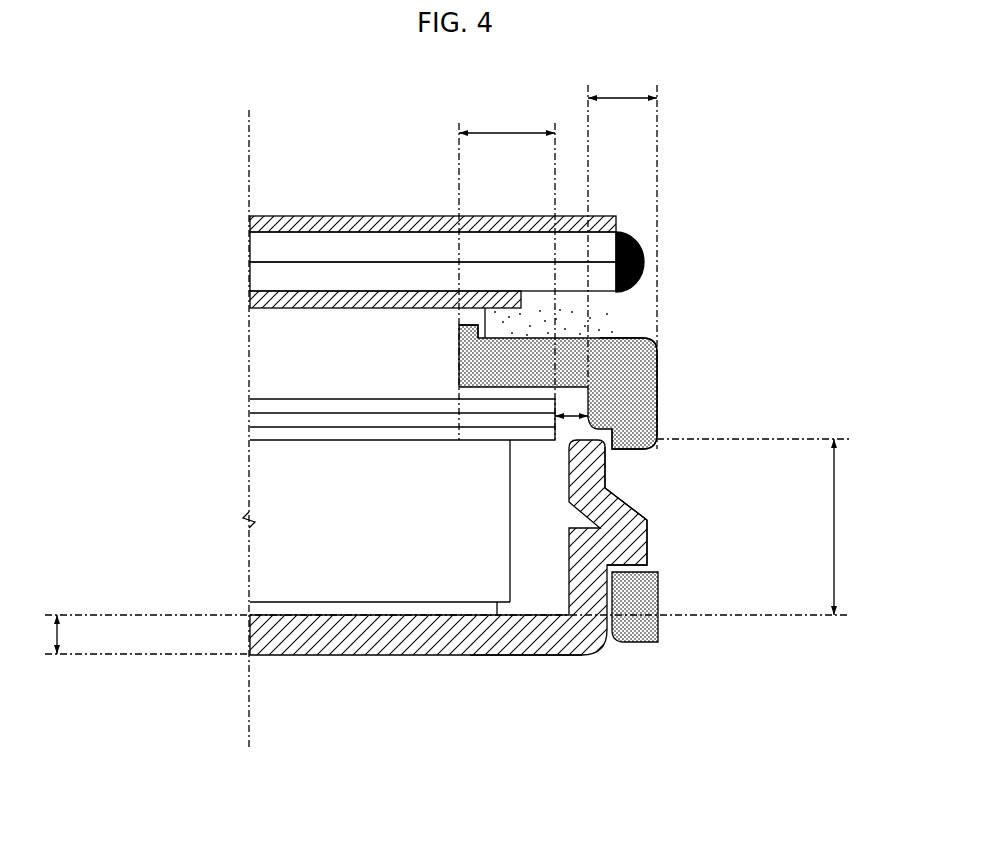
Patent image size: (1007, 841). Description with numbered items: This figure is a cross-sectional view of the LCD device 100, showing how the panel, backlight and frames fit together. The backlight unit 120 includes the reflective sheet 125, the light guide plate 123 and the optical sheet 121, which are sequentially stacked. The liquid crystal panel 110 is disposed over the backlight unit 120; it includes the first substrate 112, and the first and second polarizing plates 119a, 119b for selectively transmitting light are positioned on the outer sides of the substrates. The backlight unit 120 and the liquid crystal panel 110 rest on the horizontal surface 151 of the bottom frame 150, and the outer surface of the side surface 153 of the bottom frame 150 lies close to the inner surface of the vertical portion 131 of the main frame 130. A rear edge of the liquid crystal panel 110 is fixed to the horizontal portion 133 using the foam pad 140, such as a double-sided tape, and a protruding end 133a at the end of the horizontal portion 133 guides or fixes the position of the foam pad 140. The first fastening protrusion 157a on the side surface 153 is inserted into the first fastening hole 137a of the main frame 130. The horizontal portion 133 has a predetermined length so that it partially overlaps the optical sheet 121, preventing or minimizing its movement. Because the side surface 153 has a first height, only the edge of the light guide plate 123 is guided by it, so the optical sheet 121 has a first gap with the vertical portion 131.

The LCD device 100 is at (448, 427).
The liquid crystal panel 110 is at (372, 255).
The first substrate 112 is at (253, 278).
The first polarizing plate 119a is at (250, 300).
The second polarizing plate 119b is at (250, 216).
The backlight unit 120 is at (457, 581).
The optical sheet 121 is at (252, 436).
The light guide plate 123 is at (258, 548).
The reflective sheet 125 is at (262, 602).
The main frame 130 is at (595, 376).
The vertical portion 131 is at (657, 394).
The horizontal portion 133 is at (657, 345).
The protruding end 133a is at (458, 325).
The first fastening hole 137a is at (648, 481).
The foam pad 140 is at (537, 365).
The bottom frame 150 is at (582, 687).
The horizontal surface 151 is at (513, 655).
The side surface 153 is at (653, 656).
The first fastening protrusion 157a is at (648, 527).